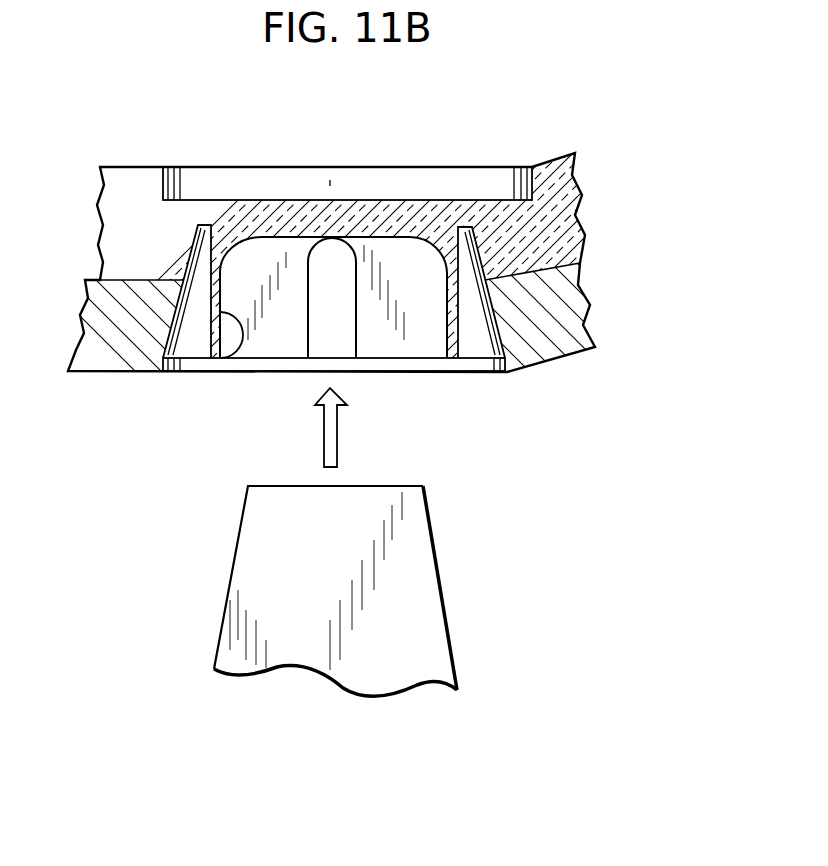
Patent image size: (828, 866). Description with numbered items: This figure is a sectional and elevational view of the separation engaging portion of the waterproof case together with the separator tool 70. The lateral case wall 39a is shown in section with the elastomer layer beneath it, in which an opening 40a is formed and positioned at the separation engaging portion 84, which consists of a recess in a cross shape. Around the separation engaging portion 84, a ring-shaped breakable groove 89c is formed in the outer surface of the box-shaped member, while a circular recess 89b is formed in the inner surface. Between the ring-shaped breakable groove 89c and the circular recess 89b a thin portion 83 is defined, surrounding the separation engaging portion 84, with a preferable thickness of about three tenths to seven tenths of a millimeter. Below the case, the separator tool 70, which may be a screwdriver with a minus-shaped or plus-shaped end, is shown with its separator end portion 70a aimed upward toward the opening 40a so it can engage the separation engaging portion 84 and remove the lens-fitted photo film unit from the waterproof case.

The lateral case wall 39a is at (540, 225).
The opening 40a is at (553, 315).
The circular recess 89b is at (170, 184).
The ring-shaped breakable groove 89c is at (506, 361).
The thin portion 83 is at (468, 213).
The separation engaging portion 84 is at (242, 340).
The separator tool 70 is at (463, 623).
The separator end portion 70a is at (407, 537).